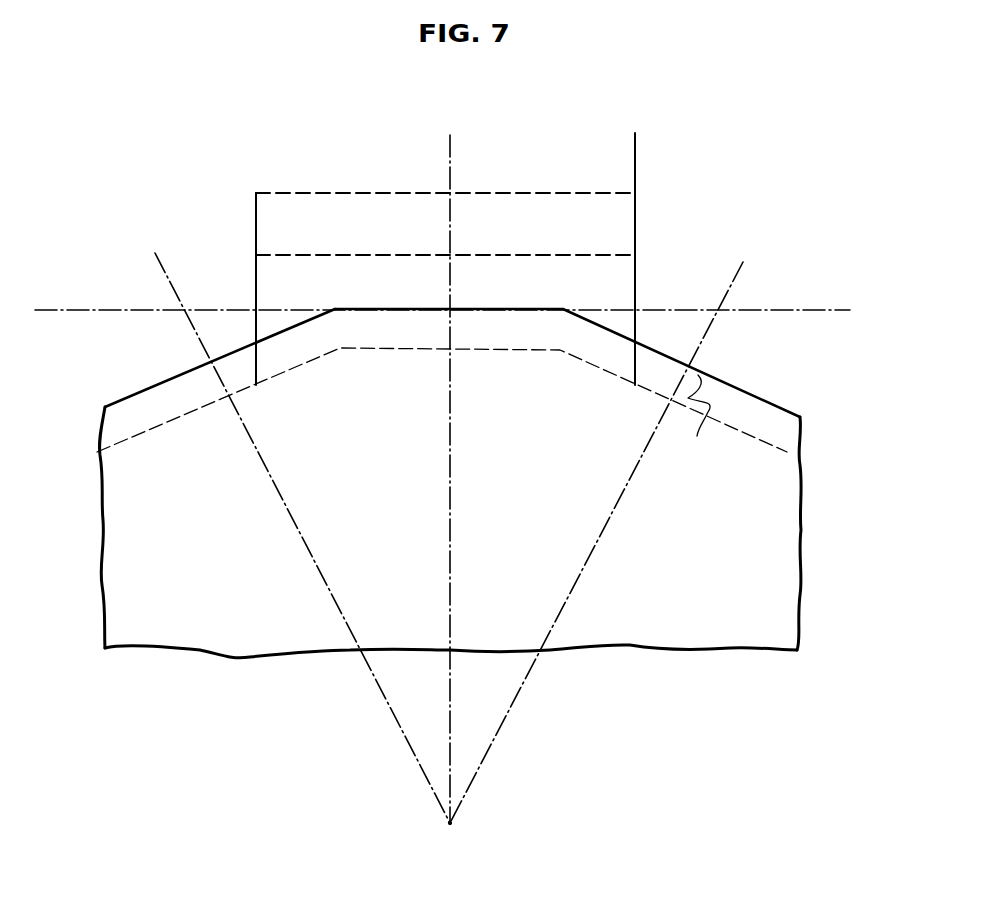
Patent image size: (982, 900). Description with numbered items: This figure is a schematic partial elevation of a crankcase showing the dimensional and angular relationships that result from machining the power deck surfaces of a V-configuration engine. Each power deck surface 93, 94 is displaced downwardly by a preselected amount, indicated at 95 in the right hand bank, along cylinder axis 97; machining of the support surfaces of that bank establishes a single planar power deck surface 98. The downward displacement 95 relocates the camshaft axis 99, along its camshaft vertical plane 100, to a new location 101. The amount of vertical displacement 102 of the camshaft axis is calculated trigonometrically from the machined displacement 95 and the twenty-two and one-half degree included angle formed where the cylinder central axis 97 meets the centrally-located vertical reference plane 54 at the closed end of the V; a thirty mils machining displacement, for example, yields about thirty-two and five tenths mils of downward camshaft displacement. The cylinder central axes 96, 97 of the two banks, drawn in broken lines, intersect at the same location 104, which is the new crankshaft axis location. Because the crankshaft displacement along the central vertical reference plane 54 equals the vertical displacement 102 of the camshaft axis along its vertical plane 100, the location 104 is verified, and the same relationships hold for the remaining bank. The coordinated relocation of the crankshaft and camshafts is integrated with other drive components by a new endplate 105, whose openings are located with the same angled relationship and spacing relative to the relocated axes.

The vertical reference plane 54 is at (452, 480).
The power deck surface 93 is at (143, 393).
The power deck surface 94 is at (768, 397).
The downward displacement 95 is at (695, 420).
The cylinder axis 96 is at (272, 468).
The cylinder axis 97 is at (617, 505).
The single planar power deck surface 98 is at (787, 452).
The camshaft axis 99 is at (618, 193).
The camshaft vertical plane 100 is at (636, 300).
The new camshaft axis location 101 is at (618, 255).
The vertical displacement of camshaft axis 102 is at (645, 193).
The crankshaft axis location 104 is at (452, 823).
The endplate 105 is at (723, 594).